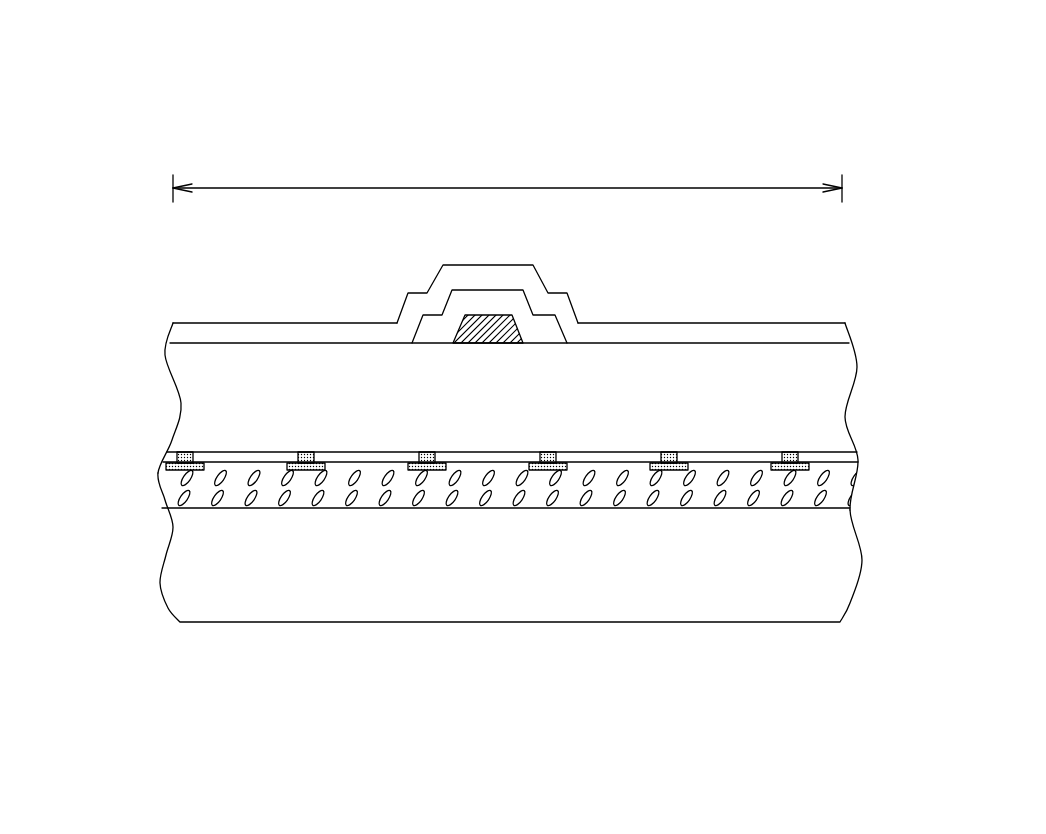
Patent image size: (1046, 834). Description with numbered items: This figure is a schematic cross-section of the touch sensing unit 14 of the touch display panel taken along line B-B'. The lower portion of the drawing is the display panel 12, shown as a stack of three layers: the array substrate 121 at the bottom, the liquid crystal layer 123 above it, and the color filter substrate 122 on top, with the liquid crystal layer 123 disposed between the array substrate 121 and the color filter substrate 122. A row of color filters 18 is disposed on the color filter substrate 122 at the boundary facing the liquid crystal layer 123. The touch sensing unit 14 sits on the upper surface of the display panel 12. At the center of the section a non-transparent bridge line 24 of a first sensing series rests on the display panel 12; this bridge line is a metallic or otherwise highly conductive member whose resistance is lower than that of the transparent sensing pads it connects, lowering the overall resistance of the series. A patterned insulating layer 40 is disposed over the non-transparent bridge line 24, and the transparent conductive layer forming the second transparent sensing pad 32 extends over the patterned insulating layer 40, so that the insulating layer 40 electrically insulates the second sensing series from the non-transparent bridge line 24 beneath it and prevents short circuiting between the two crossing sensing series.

The touch sensing unit 14 is at (695, 120).
The display panel 12 is at (102, 387).
The array substrate 121 is at (175, 558).
The color filter substrate 122 is at (183, 403).
The liquid crystal layer 123 is at (180, 486).
The color filter 18 is at (252, 457).
The non-transparent bridge line 24 is at (505, 335).
The second transparent sensing pad 32 is at (470, 273).
The patterned insulating layer 40 is at (503, 300).